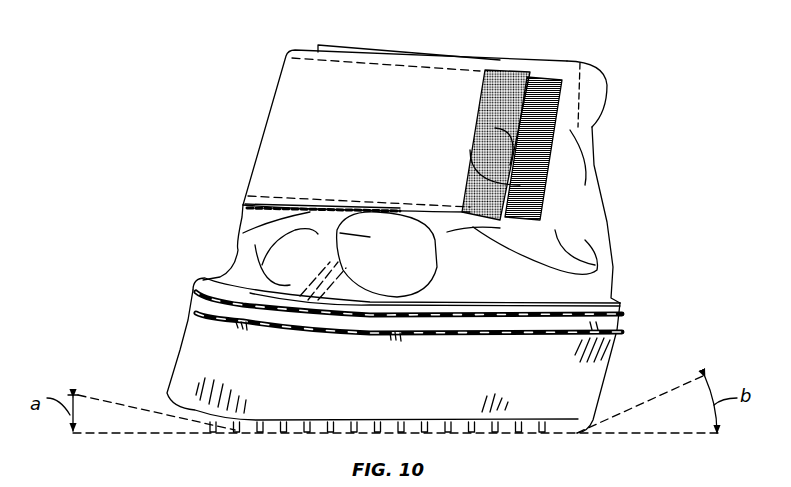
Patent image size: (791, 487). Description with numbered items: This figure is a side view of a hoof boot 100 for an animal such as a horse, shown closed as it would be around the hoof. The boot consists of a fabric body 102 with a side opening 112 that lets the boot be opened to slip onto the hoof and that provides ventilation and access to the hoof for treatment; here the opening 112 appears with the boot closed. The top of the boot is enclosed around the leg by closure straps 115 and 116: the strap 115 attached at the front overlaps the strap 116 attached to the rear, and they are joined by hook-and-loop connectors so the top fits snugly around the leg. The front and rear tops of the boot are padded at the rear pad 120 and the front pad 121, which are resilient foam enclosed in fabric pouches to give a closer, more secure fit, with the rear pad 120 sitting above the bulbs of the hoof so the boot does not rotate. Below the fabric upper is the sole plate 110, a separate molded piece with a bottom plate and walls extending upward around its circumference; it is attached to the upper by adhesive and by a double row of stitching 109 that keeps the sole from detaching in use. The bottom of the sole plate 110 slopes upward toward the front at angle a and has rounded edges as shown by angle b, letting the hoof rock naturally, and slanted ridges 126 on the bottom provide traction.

The article of footwear 100 is at (146, 67).
The upper 102 is at (157, 263).
The double row of stitching 109 is at (622, 313).
The sole plate 110 is at (173, 348).
The side opening 112 is at (340, 233).
The closure strap 115 is at (285, 100).
The closure strap 116 is at (553, 118).
The rear pad 120 is at (600, 88).
The front pad 121 is at (318, 45).
The slanted ridges 126 is at (447, 430).